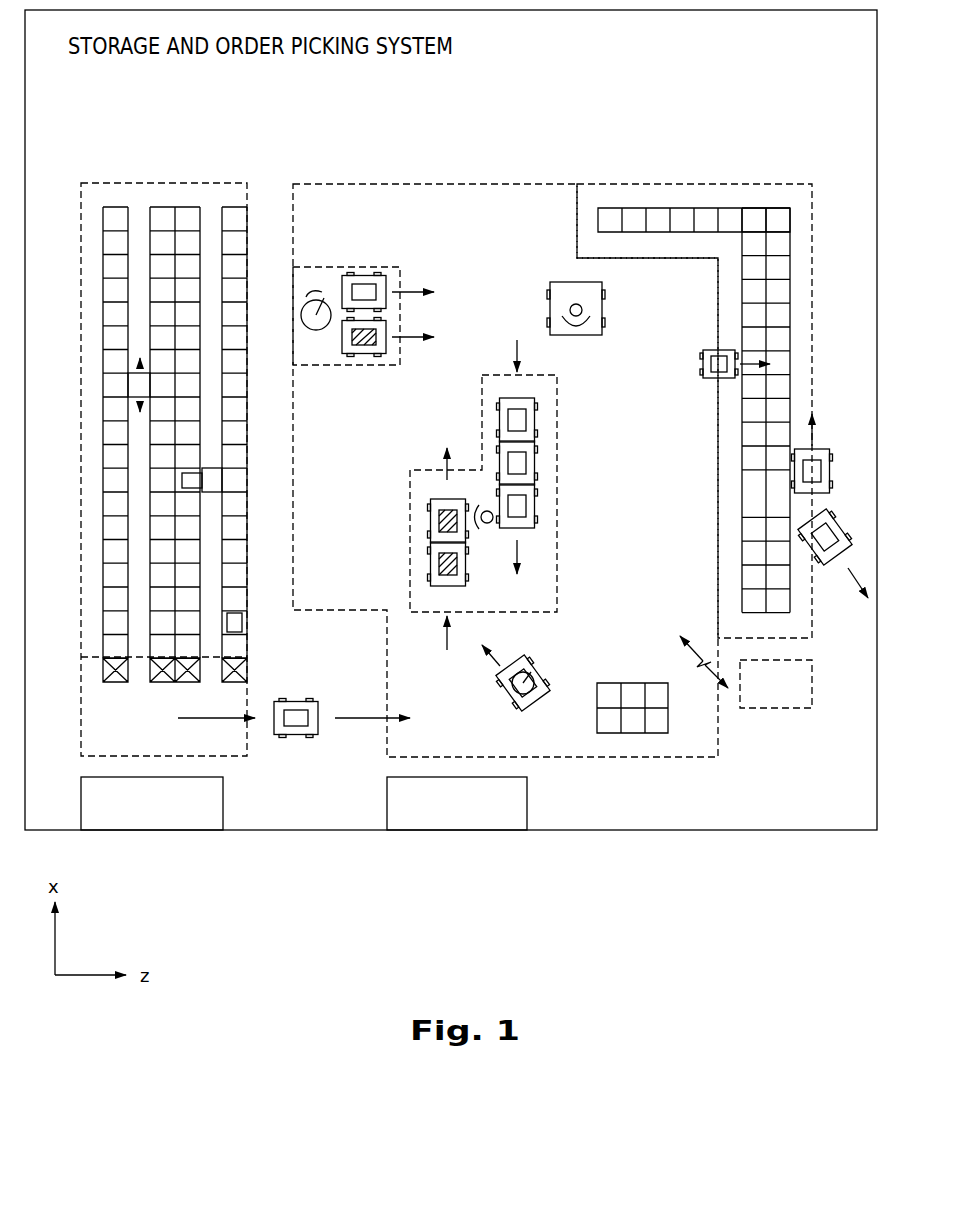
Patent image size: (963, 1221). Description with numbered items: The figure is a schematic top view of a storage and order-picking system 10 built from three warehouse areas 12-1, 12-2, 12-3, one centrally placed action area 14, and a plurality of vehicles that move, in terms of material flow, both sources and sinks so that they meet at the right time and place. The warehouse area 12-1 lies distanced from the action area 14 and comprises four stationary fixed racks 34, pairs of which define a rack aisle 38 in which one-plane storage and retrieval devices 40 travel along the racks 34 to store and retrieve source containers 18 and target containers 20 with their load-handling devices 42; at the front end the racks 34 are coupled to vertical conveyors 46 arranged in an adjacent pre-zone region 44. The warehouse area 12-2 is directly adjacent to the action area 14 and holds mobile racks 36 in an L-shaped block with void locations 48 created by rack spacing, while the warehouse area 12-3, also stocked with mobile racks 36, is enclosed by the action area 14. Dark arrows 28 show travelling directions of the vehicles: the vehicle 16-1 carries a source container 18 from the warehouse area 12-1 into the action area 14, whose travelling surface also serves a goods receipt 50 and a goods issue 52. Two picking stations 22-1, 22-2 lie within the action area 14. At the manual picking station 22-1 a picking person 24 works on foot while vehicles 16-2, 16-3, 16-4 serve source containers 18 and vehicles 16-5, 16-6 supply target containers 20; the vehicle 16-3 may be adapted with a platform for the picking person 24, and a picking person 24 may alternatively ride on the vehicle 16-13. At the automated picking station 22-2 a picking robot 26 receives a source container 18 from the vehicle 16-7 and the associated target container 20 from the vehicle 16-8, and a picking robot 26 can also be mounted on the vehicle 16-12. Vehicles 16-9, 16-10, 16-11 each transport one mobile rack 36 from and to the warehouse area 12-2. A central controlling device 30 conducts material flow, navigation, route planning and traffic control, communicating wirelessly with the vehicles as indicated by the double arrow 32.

The storage and order-picking system 10 is at (486, 62).
The warehouse area 12-1 is at (152, 175).
The warehouse area 12-2 is at (596, 113).
The warehouse area 12-3 is at (616, 742).
The action area 14 is at (546, 218).
The vehicle 16-1 is at (296, 732).
The vehicle 16-2 is at (537, 421).
The vehicle 16-3 is at (537, 464).
The vehicle 16-4 is at (537, 507).
The vehicle 16-5 is at (430, 522).
The vehicle 16-6 is at (430, 565).
The vehicle 16-7 is at (362, 275).
The vehicle 16-8 is at (362, 355).
The vehicle 16-9 is at (706, 350).
The vehicle 16-10 is at (814, 449).
The vehicle 16-11 is at (832, 560).
The vehicle 16-12 is at (505, 705).
The vehicle 16-13 is at (592, 337).
The source container 18 is at (242, 623).
The target container 20 is at (340, 338).
The picking station 22-1 is at (565, 572).
The picking station 22-2 is at (326, 380).
The picking person 24 is at (484, 538).
The picking robot 26 is at (296, 297).
The dark arrow 28 is at (517, 340).
The controlling device 30 is at (790, 698).
The double arrow 32 is at (703, 666).
The stationary fixed rack 34 is at (110, 198).
The mobile rack 36 is at (790, 316).
The rack aisle 38 is at (196, 300).
The storage and retrieval device 40 is at (130, 385).
The load-handling device 42 is at (196, 469).
The pre-zone region 44 is at (76, 724).
The vertical conveyor 46 is at (185, 685).
The void location 48 is at (775, 363).
The goods receipt 50 is at (187, 817).
The goods issue 52 is at (494, 817).